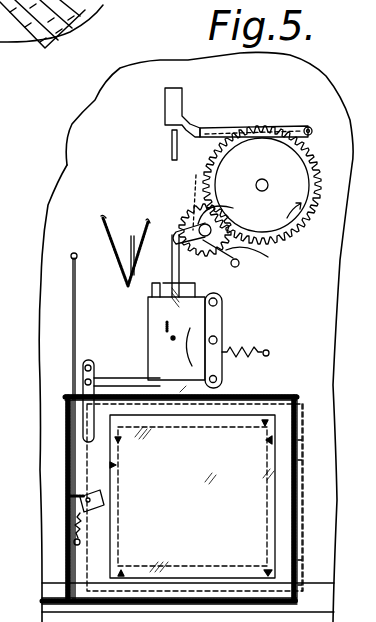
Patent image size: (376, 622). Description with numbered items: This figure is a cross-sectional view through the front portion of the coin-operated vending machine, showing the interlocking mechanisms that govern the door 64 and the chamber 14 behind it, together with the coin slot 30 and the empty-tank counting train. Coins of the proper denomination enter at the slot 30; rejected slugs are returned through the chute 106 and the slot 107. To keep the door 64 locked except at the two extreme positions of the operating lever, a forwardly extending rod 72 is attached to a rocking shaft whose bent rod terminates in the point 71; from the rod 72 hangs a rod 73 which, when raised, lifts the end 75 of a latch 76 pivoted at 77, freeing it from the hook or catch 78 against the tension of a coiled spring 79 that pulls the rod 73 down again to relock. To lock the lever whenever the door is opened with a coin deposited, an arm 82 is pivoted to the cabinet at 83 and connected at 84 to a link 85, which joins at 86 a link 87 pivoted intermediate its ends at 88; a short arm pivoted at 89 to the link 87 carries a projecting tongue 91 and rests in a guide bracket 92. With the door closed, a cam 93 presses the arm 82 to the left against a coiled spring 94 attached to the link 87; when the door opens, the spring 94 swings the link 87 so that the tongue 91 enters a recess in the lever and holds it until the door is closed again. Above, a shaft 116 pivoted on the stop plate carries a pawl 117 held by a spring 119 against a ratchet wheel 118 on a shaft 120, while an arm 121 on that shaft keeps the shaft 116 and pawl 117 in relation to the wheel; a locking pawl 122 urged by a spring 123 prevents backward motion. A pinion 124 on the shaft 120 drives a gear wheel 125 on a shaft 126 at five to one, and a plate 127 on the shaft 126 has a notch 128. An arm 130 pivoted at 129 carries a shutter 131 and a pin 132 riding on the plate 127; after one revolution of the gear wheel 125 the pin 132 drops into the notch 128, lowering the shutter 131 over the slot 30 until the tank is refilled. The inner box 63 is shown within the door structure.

The chamber 14 is at (40, 502).
The coin slot 30 is at (172, 152).
The inner box 63 is at (243, 537).
The door 64 is at (286, 480).
The point of rod 71 is at (170, 307).
The rod 72 is at (72, 259).
The depending rod 73 is at (72, 333).
The latch end 75 is at (72, 513).
The latch 76 is at (100, 507).
The latch pivot 77 is at (98, 493).
The hook or catch 78 is at (103, 503).
The coiled spring 79 is at (72, 535).
The arm 82 is at (95, 378).
The arm pivot 83 is at (92, 364).
The pivotal connection 84 is at (90, 383).
The link 85 is at (116, 353).
The pivotal connection 86 is at (220, 381).
The link 87 is at (222, 326).
The link pivot 88 is at (218, 340).
The arm pivot 89 is at (218, 302).
The projecting tongue 91 is at (297, 385).
The guide bracket 92 is at (180, 350).
The cam 93 is at (270, 353).
The coiled spring 94 is at (252, 350).
The chute 106 is at (121, 253).
The return slot 107 is at (131, 236).
The shaft 116 is at (147, 220).
The pawl 117 is at (178, 233).
The ratchet wheel 118 is at (222, 210).
The spring 119 is at (163, 222).
The shaft 120 is at (224, 221).
The arm 121 is at (209, 252).
The locking pawl 122 is at (264, 255).
The spring 123 is at (240, 266).
The pinion 124 is at (180, 198).
The gear wheel 125 is at (306, 226).
The shaft 126 is at (269, 183).
The plate 127 is at (323, 150).
The notch 128 is at (290, 128).
The arm pivot 129 is at (316, 122).
The arm 130 is at (226, 123).
The shutter 131 is at (185, 101).
The pin 132 is at (284, 120).